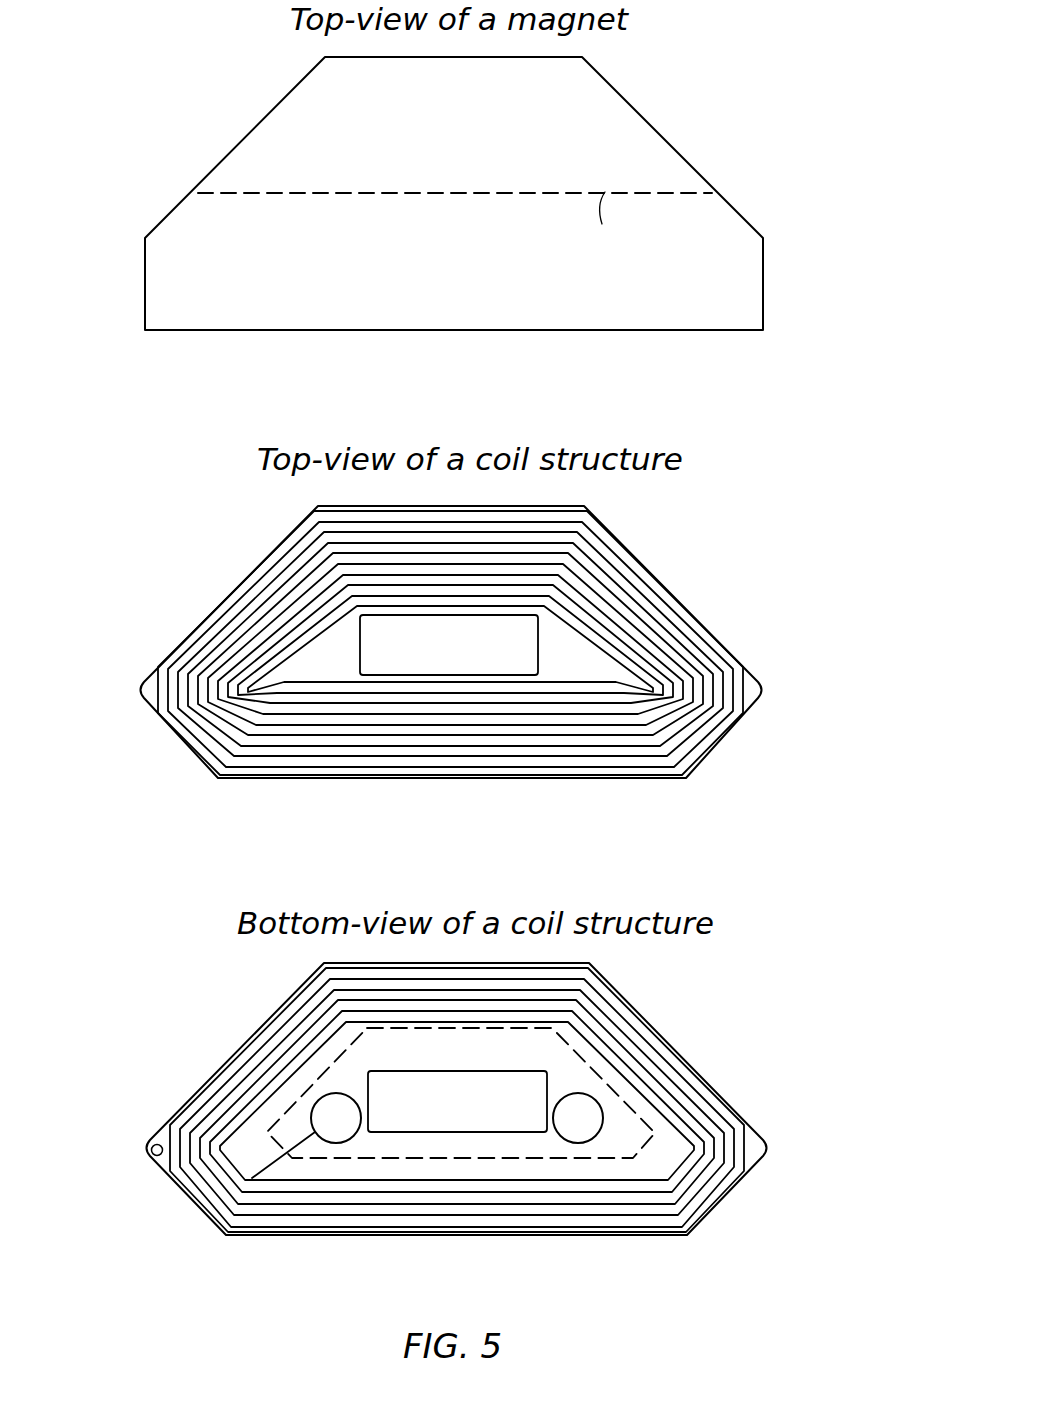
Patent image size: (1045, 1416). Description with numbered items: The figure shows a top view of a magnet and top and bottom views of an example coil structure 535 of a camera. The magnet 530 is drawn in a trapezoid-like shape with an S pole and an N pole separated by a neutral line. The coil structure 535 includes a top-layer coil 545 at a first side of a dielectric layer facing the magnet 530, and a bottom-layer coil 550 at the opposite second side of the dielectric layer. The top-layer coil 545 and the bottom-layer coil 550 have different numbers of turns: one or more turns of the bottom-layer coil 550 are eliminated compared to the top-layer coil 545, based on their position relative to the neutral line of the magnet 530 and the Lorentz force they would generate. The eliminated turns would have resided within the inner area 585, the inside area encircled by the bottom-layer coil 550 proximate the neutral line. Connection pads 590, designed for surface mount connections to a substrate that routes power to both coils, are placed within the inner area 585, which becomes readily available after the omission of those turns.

The magnet 530 is at (683, 158).
The coil structure 535 is at (808, 420).
The top-layer coil 545 is at (628, 585).
The bottom-layer coil 550 is at (642, 1045).
The inner area 585 is at (357, 1055).
The connection pad 590 is at (333, 1140).